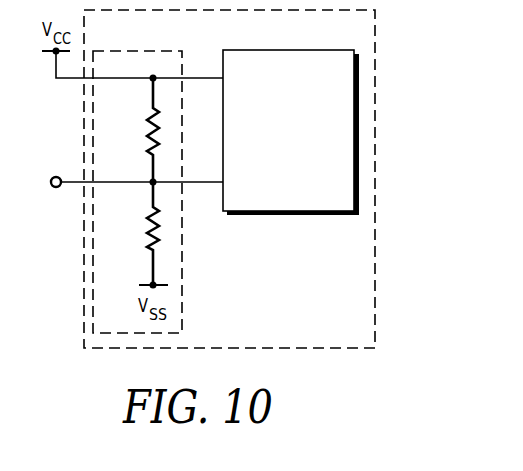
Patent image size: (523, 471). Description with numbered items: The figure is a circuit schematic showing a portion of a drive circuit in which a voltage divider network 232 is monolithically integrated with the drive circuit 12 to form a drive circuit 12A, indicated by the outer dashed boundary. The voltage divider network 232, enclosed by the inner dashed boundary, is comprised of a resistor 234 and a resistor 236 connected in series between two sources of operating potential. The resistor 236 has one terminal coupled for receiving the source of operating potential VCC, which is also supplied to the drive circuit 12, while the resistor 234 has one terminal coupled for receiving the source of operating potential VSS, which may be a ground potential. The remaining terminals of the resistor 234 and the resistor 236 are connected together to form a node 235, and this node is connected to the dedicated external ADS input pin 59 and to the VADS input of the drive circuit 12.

The drive circuit 12 is at (318, 50).
The drive circuit 12A is at (377, 43).
The dedicated external ADS input pin 59 is at (53, 177).
The voltage divider network 232 is at (182, 293).
The resistor 234 is at (150, 225).
The node 235 is at (150, 182).
The resistor 236 is at (150, 127).